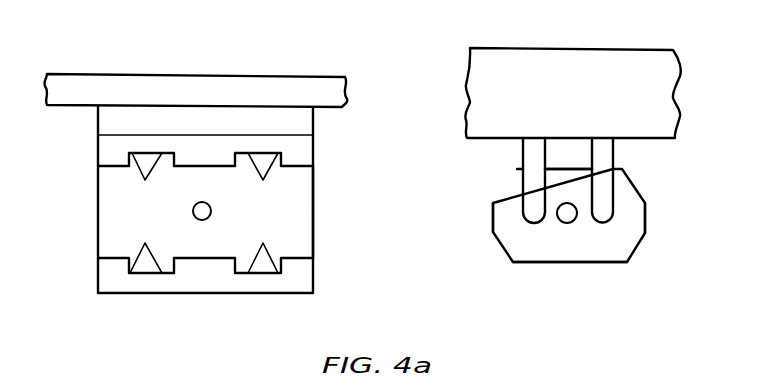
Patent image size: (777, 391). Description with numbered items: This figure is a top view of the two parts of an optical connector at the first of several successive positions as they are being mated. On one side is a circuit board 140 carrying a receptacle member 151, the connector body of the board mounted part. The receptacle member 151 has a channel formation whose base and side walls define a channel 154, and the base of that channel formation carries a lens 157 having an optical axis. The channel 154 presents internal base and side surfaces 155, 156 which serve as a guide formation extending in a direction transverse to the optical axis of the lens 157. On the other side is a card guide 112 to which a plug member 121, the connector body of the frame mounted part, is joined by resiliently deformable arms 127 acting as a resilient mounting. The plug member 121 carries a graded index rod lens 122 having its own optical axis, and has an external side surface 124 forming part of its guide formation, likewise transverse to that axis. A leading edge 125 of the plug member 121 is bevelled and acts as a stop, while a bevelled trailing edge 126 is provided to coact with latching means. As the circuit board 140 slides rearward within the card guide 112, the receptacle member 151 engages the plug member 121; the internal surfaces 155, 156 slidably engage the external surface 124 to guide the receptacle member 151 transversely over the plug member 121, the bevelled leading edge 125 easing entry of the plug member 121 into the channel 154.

The circuit board 140 is at (227, 80).
The receptacle member 151 is at (113, 218).
The channel 154 is at (292, 195).
The internal base surface 155 is at (292, 234).
The internal side surfaces 156 is at (112, 168).
The lens 157 is at (202, 211).
The card guide 112 is at (533, 55).
The plug member 121 is at (628, 232).
The graded index rod lens 122 is at (567, 223).
The external side surface 124 is at (567, 168).
The leading edge 125 is at (494, 215).
The trailing edge 126 is at (645, 213).
The resiliently deformable arms 127 is at (530, 152).